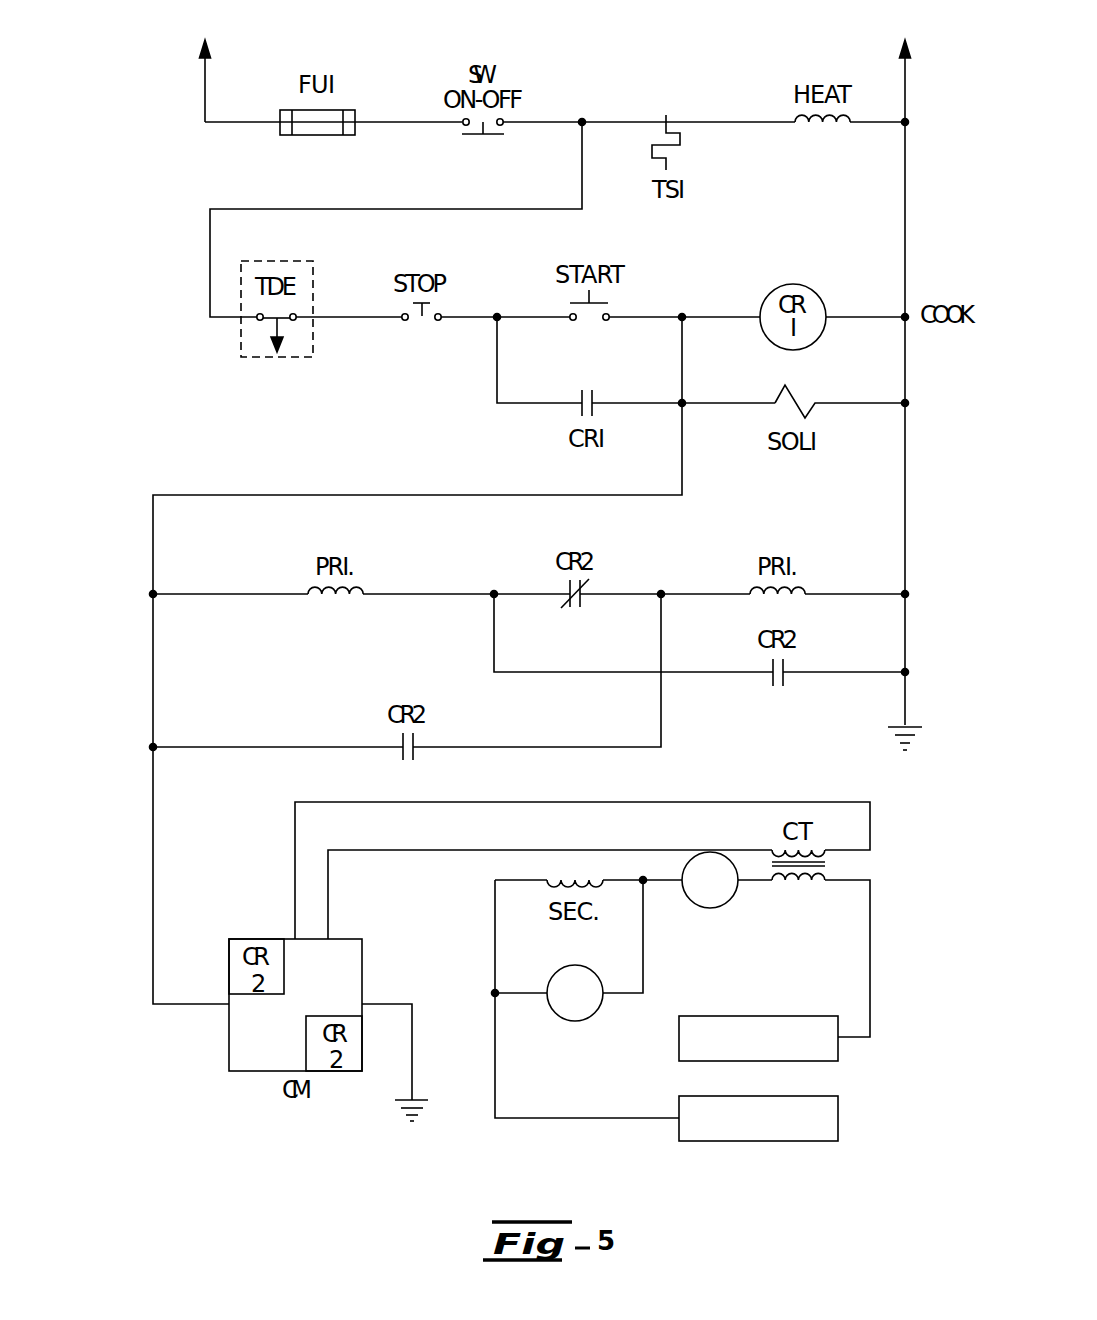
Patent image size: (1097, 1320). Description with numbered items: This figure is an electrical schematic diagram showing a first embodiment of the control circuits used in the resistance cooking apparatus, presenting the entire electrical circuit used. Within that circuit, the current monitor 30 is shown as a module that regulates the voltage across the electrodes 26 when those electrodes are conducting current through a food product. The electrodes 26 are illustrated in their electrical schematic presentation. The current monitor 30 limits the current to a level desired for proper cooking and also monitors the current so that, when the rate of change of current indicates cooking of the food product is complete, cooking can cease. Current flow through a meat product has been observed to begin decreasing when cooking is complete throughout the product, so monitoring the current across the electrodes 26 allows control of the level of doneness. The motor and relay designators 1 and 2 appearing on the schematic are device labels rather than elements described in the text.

The current monitor 30 is at (259, 938).
The electrodes 26 is at (758, 1016).
The motor M1 (designator numeral) 1 is at (710, 880).
The motor M2 (designator numeral) 2 is at (575, 995).